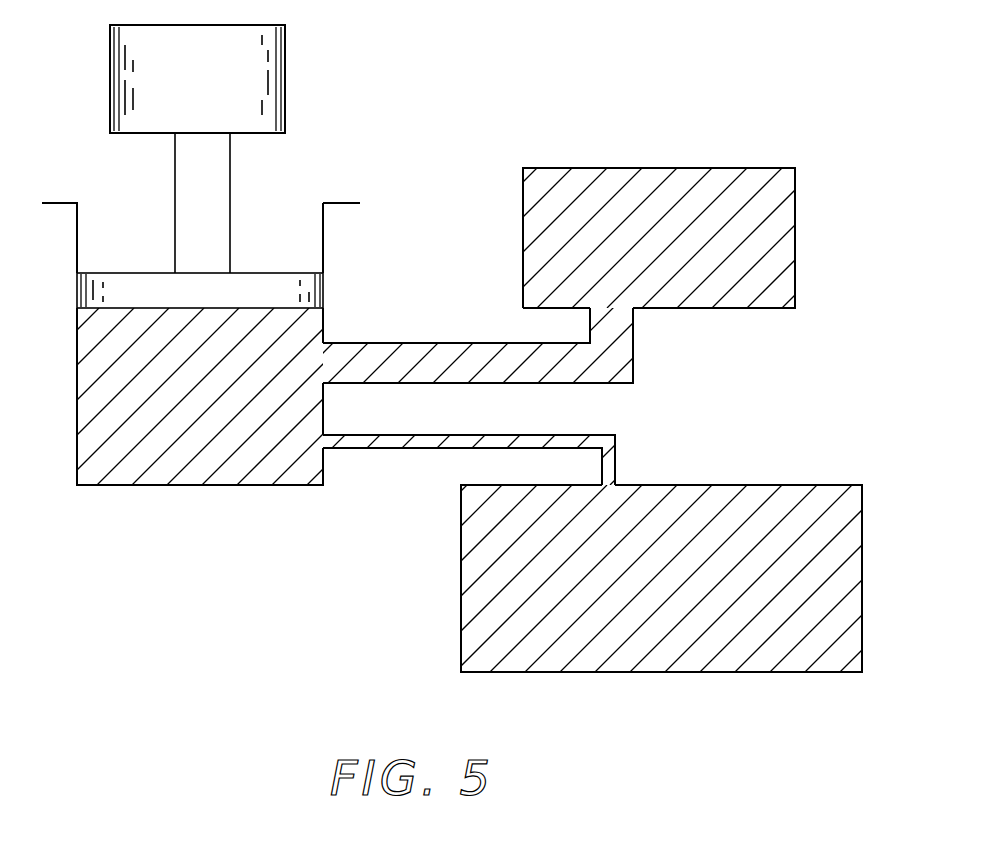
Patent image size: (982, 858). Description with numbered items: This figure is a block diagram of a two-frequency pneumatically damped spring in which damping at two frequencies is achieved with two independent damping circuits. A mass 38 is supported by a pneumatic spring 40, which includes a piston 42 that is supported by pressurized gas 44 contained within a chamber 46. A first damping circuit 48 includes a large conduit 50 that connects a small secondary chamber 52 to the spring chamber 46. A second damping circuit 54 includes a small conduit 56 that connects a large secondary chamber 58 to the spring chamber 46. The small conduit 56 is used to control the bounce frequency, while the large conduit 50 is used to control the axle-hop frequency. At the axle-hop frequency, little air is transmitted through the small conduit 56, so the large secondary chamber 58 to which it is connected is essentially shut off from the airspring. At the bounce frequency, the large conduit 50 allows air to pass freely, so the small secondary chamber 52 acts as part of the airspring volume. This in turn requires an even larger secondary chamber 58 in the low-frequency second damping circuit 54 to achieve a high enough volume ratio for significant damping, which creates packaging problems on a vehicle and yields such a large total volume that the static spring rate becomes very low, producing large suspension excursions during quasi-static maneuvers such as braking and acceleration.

The mass 38 is at (278, 72).
The pneumatic spring 40 is at (52, 203).
The piston 42 is at (230, 193).
The pressurized gas 44 is at (85, 452).
The chamber 46 is at (272, 486).
The first damping circuit 48 is at (760, 350).
The large conduit 50 is at (410, 343).
The small secondary chamber 52 is at (587, 168).
The second damping circuit 54 is at (746, 474).
The small conduit 56 is at (463, 432).
The large secondary chamber 58 is at (722, 673).